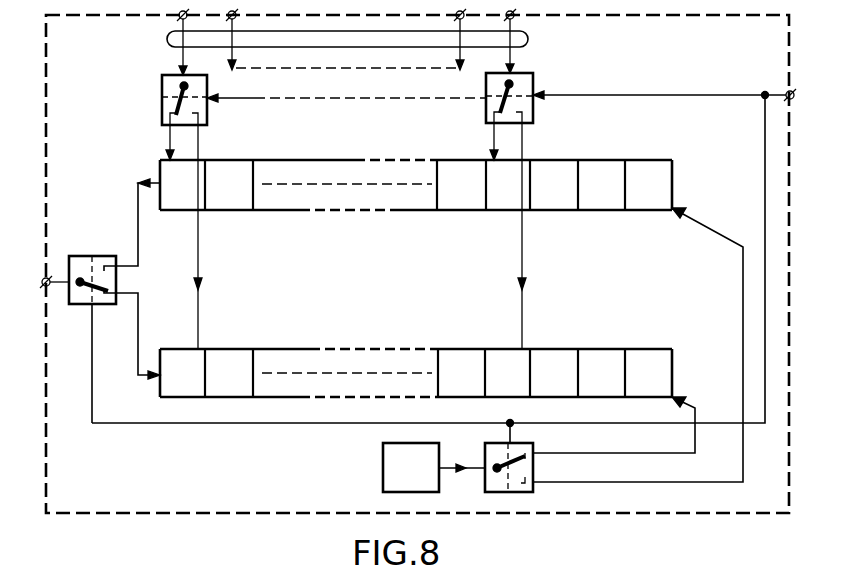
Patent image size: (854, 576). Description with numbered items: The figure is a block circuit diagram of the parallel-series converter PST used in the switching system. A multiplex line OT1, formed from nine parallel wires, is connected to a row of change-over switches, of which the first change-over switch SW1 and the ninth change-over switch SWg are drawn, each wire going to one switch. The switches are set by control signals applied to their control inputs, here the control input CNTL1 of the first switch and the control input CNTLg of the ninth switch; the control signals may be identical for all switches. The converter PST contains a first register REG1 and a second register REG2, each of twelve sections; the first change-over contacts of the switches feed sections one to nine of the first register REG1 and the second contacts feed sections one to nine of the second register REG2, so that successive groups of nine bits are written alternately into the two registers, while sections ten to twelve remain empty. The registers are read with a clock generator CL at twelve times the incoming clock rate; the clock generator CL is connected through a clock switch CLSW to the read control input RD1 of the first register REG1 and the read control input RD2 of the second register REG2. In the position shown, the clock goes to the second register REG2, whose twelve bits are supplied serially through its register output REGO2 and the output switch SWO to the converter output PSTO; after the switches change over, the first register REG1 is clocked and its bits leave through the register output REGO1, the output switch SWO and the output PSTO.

The multiplex line OT1 is at (529, 39).
The change-over switch SW1 is at (162, 100).
The change-over switch SWg is at (486, 100).
The control input CNTL1 is at (237, 99).
The control input CNTLg is at (607, 98).
The first register REG1 is at (616, 159).
The second register REG2 is at (612, 349).
The read control input RD1 is at (676, 206).
The read control input RD2 is at (677, 394).
The register output REGO1 is at (155, 188).
The register output REGO2 is at (140, 382).
The output PSTO is at (50, 278).
The output switch SWO is at (67, 298).
The clock generator CL is at (383, 468).
The clock switch CLSW is at (533, 488).
The parallel-series converter PST is at (694, 516).